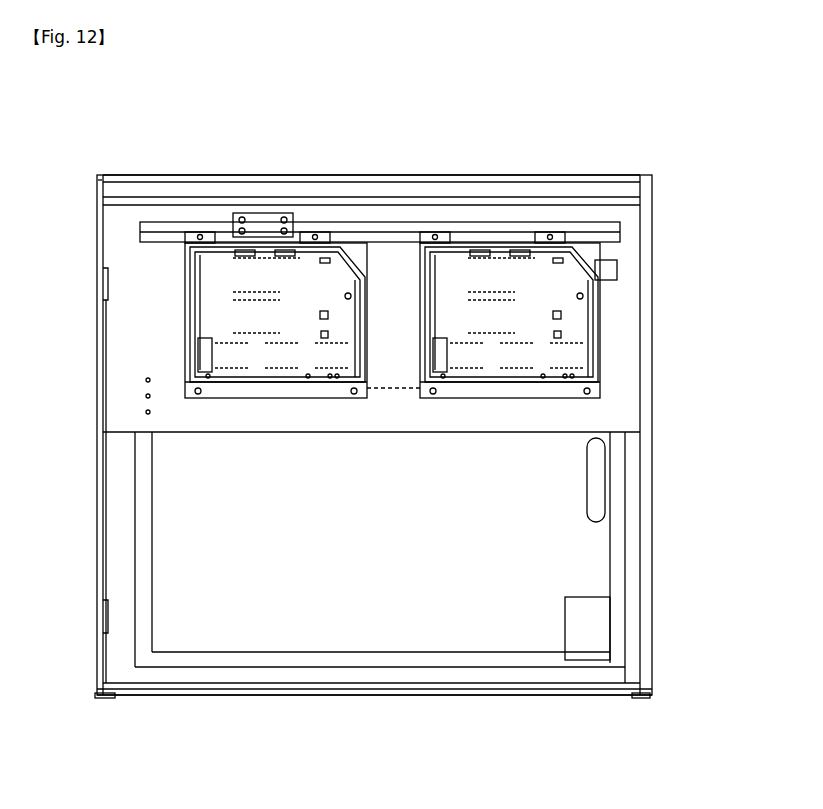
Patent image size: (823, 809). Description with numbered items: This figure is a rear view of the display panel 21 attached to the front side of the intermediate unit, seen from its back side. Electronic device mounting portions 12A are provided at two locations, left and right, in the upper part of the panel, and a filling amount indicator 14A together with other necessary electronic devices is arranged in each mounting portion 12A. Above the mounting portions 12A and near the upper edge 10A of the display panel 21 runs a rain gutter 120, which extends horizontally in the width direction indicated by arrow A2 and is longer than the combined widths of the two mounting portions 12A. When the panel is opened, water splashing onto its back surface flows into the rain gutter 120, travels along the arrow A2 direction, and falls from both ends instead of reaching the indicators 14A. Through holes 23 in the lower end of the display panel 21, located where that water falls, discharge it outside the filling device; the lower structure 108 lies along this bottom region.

The upper edge 10A is at (228, 175).
The arrow direction A2 is at (362, 157).
The display panel 21 is at (543, 145).
The rain gutter 120 is at (612, 222).
The filling amount indicator 14A is at (215, 303).
The electronic device mounting portion 12A is at (180, 362).
The bottom plate 108 is at (560, 695).
The through hole 23 is at (108, 698).